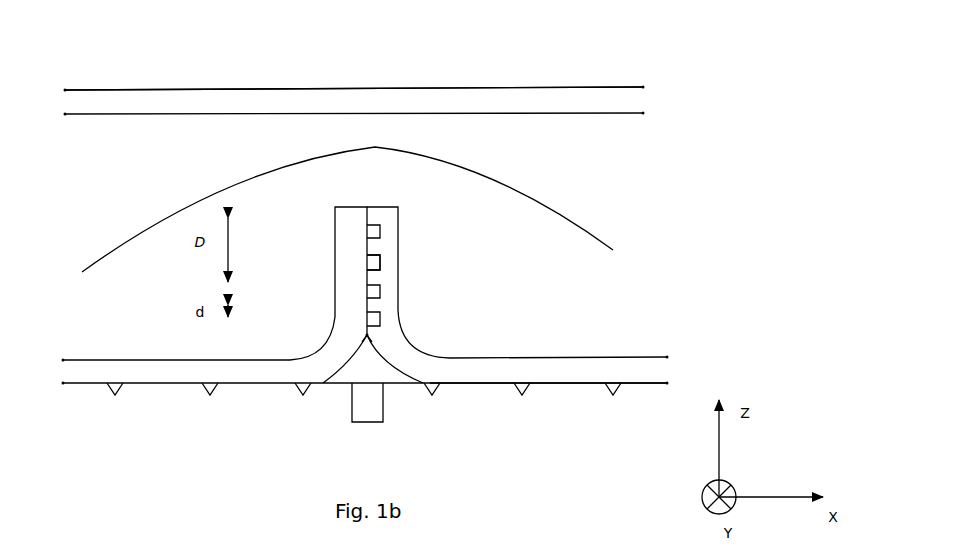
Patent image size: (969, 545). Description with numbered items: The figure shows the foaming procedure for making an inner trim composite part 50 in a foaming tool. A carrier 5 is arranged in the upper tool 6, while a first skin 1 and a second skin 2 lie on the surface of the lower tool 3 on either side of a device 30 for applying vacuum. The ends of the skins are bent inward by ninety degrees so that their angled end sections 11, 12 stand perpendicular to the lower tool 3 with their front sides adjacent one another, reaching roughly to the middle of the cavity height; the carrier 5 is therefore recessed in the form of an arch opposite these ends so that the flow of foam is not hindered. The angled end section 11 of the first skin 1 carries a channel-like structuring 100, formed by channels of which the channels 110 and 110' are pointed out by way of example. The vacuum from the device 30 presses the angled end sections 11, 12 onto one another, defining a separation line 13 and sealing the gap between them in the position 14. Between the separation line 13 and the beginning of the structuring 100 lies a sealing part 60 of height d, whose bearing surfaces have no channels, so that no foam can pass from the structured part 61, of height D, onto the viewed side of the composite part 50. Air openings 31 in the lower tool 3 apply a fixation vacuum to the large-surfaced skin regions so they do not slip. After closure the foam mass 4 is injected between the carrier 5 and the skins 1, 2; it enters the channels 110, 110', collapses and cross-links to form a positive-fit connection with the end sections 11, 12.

The first skin 1 is at (572, 372).
The second skin 2 is at (173, 372).
The lower tool 3 is at (487, 384).
The air openings 31 is at (212, 398).
The foam mass 4 is at (173, 217).
The carrier 5 is at (137, 93).
The upper tool 6 is at (298, 88).
The composite part 50 is at (545, 112).
The angled end section of the first skin 11 is at (390, 215).
The angled end section of the second skin 12 is at (347, 250).
The separation line 13 is at (362, 342).
The sealing position of the angled end sections 14 is at (377, 368).
The device for applying vacuum 30 is at (360, 423).
The sealing part 60 is at (362, 328).
The structured part 61 is at (362, 273).
The channel-like structuring 100 is at (376, 232).
The channel 110 is at (416, 265).
The channel 110' is at (417, 299).